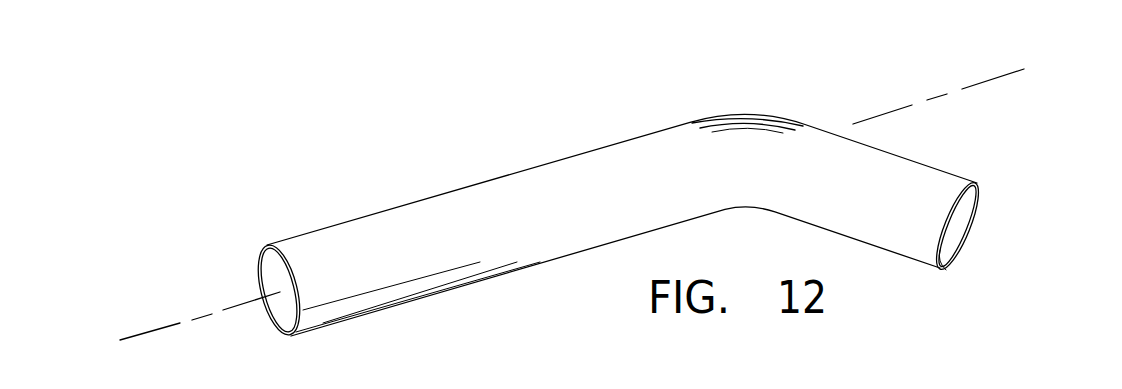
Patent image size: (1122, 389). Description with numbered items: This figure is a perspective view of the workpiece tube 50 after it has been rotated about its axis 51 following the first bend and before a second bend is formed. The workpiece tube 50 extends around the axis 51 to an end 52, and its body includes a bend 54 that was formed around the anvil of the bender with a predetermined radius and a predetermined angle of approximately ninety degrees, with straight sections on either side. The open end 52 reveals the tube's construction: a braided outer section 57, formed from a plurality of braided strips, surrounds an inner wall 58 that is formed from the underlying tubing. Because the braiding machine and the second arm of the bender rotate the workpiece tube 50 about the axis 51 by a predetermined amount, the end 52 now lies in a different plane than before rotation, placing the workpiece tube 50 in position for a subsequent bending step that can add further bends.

The workpiece tube 50 is at (533, 150).
The axis 51 is at (138, 330).
The end 52 is at (976, 184).
The bend 54 is at (755, 113).
The braided outer section 57 is at (952, 268).
The inner wall 58 is at (967, 229).